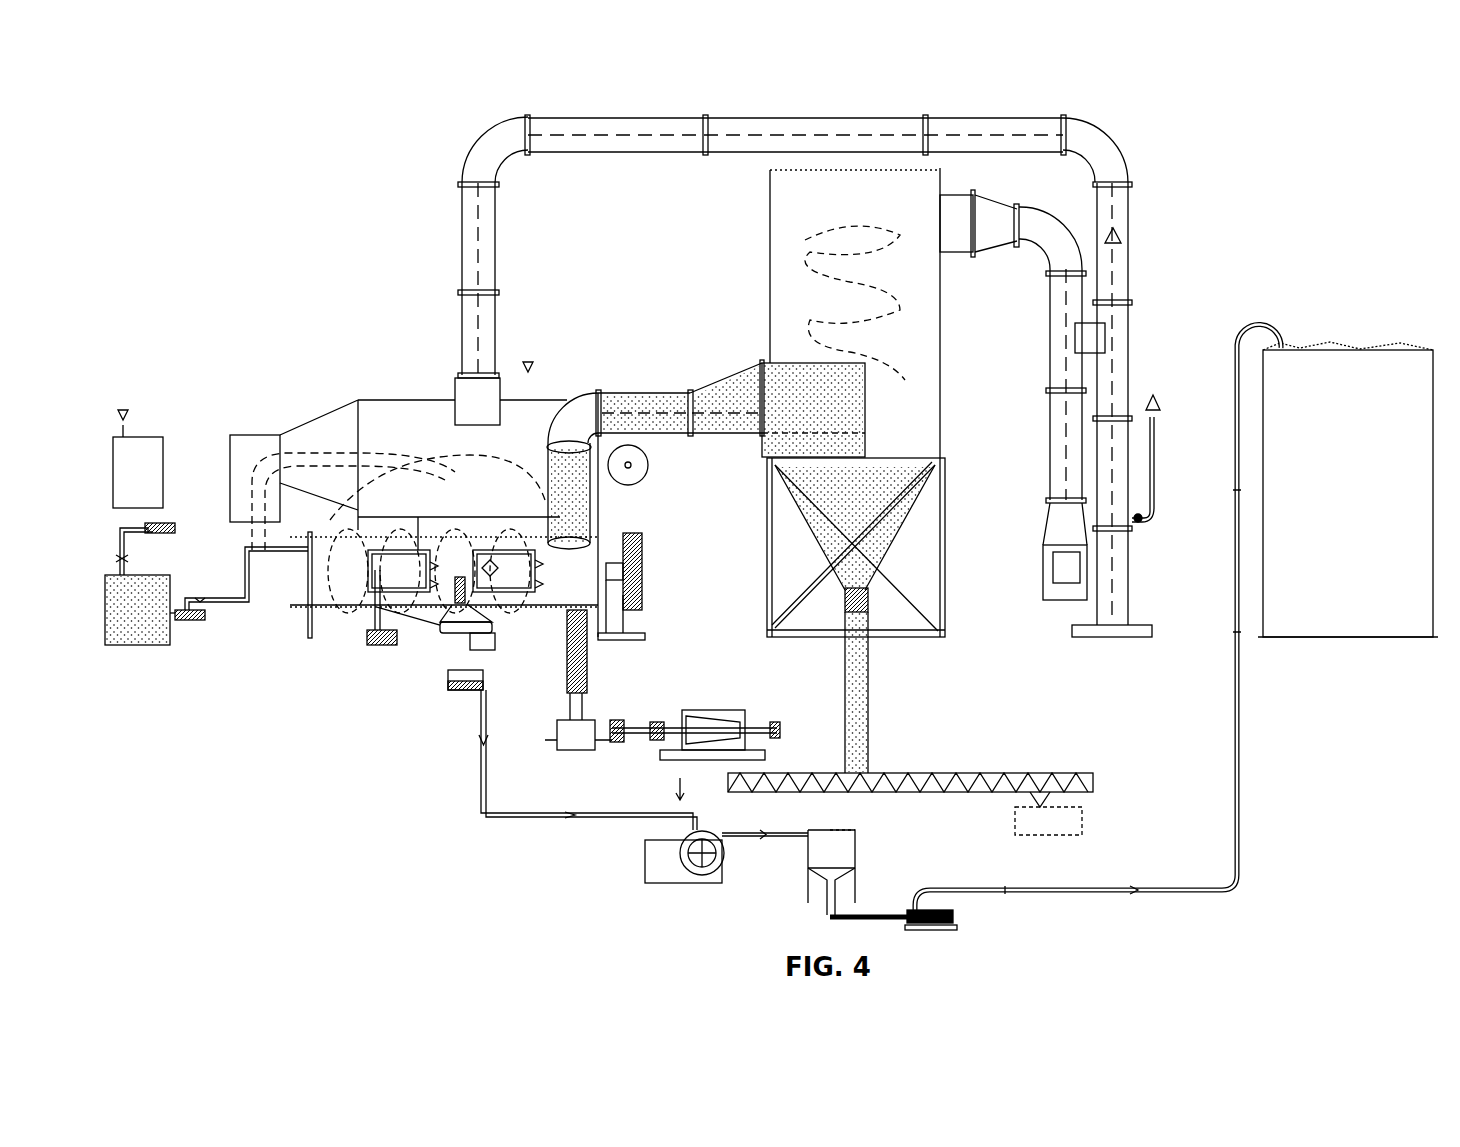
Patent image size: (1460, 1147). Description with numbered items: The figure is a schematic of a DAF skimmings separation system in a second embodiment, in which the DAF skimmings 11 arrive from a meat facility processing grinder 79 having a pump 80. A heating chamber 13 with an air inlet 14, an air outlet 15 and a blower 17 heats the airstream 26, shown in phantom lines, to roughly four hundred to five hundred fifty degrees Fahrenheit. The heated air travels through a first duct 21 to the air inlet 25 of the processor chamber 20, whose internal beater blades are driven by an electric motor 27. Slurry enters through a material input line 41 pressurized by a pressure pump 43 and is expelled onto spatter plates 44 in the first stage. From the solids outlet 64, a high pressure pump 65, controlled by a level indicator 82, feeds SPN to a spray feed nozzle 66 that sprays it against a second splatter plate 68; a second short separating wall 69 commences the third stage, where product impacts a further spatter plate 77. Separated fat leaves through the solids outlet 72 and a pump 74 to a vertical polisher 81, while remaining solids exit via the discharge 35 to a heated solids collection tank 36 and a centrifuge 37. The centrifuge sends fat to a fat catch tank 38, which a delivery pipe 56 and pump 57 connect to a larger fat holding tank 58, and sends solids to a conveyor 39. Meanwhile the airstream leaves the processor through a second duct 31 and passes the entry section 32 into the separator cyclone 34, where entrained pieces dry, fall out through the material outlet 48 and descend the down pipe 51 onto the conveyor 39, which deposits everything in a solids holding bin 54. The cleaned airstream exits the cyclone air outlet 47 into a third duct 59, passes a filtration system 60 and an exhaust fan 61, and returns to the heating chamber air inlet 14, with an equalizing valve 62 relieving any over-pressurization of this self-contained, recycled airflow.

The DAF skimmings 11 is at (150, 595).
The heating chamber 13 is at (420, 405).
The air inlet 14 is at (544, 377).
The air outlet 15 is at (270, 447).
The blower 17 is at (658, 465).
The processor chamber 20 is at (300, 600).
The first duct 21 is at (175, 530).
The air inlet 25 is at (312, 600).
The airstream 26 is at (612, 130).
The electric motor 27 is at (642, 575).
The second duct 31 is at (648, 400).
The inlet box 32 is at (760, 362).
The separator cyclone 34 is at (935, 330).
The discharge 35 is at (560, 640).
The heated solids collection tank 36 is at (557, 735).
The centrifuge 37 is at (718, 712).
The fat catch tank 38 is at (808, 875).
The conveyor 39 is at (920, 795).
The material input line 41 is at (240, 575).
The pressure pump 43 is at (195, 622).
The spatter plate 44 is at (320, 532).
The air outlet 47 is at (940, 205).
The material outlet 48 is at (870, 598).
The down pipe 51 is at (870, 700).
The solids holding bin 54 is at (1082, 822).
The delivery pipe 56 is at (1090, 885).
The pump 57 is at (955, 914).
The fat holding tank 58 is at (1326, 640).
The third duct 59 is at (1130, 213).
The filtration system 60 is at (1078, 585).
The exhaust fan 61 is at (1130, 575).
The equalizing valve 62 is at (1142, 525).
The solids outlet 64 is at (345, 622).
The high pressure pump 65 is at (385, 646).
The spray feed nozzle 66 is at (383, 571).
The second splatter plate 68 is at (388, 545).
The second short separating wall 69 is at (455, 575).
The solids outlet 72 is at (425, 640).
The pump 74 is at (481, 700).
The spatter plate 77 is at (490, 545).
The processing grinder 79 is at (163, 436).
The pump 80 is at (170, 522).
The vertical polisher 81 is at (645, 857).
The level indicator 82 is at (320, 625).